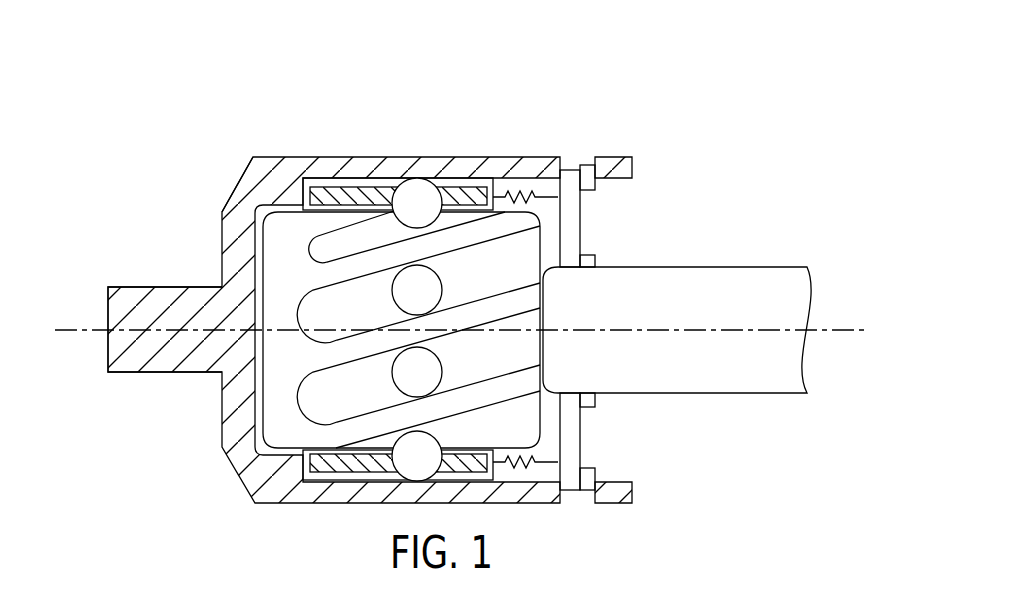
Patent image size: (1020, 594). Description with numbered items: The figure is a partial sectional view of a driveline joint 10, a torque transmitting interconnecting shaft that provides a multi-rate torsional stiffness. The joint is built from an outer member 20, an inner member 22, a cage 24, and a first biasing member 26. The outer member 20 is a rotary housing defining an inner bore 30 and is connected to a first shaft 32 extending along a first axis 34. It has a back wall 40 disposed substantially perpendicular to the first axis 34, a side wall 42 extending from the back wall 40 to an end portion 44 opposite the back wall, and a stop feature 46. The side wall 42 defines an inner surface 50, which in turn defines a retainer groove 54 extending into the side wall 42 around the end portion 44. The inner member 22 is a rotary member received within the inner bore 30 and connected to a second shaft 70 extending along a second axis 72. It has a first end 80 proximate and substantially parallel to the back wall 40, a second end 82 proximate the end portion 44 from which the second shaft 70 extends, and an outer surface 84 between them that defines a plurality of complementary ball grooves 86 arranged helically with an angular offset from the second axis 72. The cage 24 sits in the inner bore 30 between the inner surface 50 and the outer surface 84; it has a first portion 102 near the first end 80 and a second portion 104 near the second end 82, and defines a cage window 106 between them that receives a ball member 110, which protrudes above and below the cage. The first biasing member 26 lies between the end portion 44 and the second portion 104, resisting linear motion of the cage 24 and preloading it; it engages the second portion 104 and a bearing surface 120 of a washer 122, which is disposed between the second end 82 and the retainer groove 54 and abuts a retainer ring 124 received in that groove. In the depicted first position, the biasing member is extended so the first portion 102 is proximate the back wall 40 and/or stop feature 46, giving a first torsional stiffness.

The driveline joint 10 is at (712, 99).
The outer member 20 is at (247, 153).
The inner member 22 is at (528, 406).
The cage 24 is at (322, 193).
The first biasing member 26 is at (540, 195).
The inner bore 30 is at (499, 176).
The first shaft 32 is at (143, 297).
The first axis 34 is at (91, 332).
The back wall 40 is at (242, 208).
The side wall 42 is at (310, 166).
The end portion 44 is at (624, 163).
The stop feature 46 is at (287, 200).
The inner surface 50 is at (517, 188).
The retainer groove 54 is at (588, 165).
The second shaft 70 is at (708, 285).
The second axis 72 is at (829, 332).
The first end 80 is at (277, 442).
The second end 82 is at (541, 434).
The outer surface 84 is at (277, 381).
The complementary ball grooves 86 is at (317, 400).
The first portion 102 is at (311, 211).
The second portion 104 is at (478, 214).
The cage window 106 is at (401, 188).
The ball member 110 is at (414, 193).
The bearing surface 120 is at (558, 237).
The washer 122 is at (572, 230).
The retainer ring 124 is at (590, 164).